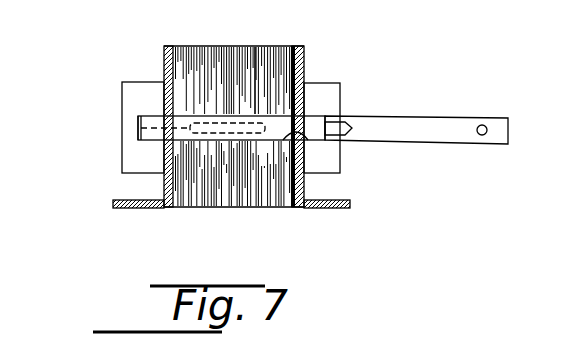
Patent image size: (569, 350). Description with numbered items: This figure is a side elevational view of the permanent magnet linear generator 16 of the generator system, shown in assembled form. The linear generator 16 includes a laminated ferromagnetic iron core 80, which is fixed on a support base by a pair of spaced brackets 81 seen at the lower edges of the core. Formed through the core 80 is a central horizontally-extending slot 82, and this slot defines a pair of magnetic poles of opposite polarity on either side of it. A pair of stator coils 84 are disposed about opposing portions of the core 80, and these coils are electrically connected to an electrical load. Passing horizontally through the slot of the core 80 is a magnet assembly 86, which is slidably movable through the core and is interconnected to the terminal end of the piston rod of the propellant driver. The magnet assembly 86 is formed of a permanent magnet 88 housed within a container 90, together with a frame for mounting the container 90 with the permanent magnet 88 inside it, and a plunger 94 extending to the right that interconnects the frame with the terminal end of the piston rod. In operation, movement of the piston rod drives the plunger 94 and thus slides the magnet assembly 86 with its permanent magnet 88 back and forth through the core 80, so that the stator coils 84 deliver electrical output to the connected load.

The permanent magnet linear generator 16 is at (106, 90).
The laminated ferromagnetic iron core 80 is at (258, 47).
The spaced brackets 81 is at (145, 210).
The central horizontally-extending slot 82 is at (308, 141).
The stator coils 84 is at (331, 83).
The magnet assembly 86 is at (147, 145).
The permanent magnet 88 is at (138, 128).
The container 90 is at (152, 114).
The plunger 94 is at (405, 116).